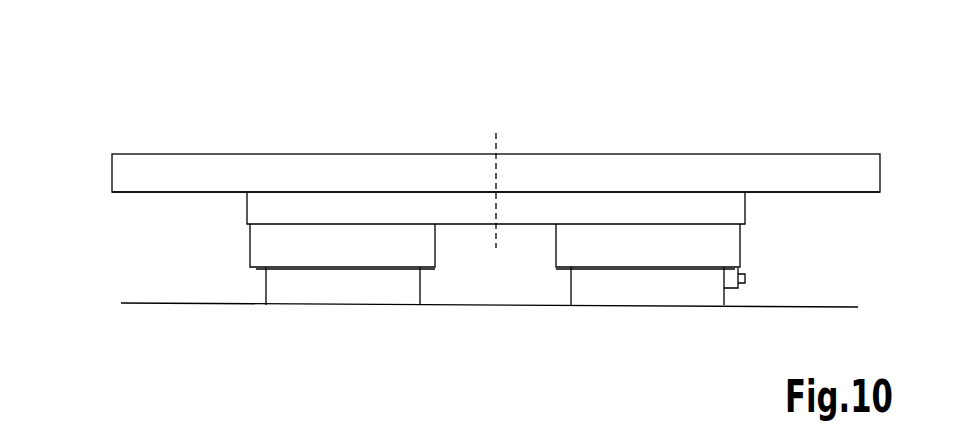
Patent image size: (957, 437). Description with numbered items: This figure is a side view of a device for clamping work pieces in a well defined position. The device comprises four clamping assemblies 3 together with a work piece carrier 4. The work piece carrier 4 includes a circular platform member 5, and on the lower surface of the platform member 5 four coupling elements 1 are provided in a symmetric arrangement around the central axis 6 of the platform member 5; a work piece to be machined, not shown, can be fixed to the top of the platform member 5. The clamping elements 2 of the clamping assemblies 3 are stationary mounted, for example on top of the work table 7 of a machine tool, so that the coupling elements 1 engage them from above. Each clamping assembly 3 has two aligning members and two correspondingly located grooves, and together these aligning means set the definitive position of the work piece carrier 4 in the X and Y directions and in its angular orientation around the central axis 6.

The coupling element 1 is at (279, 243).
The clamping element 2 is at (375, 295).
The clamping assembly 3 is at (240, 284).
The work piece carrier 4 is at (317, 128).
The platform member 5 is at (163, 173).
The central axis 6 is at (501, 136).
The work table 7 is at (474, 311).